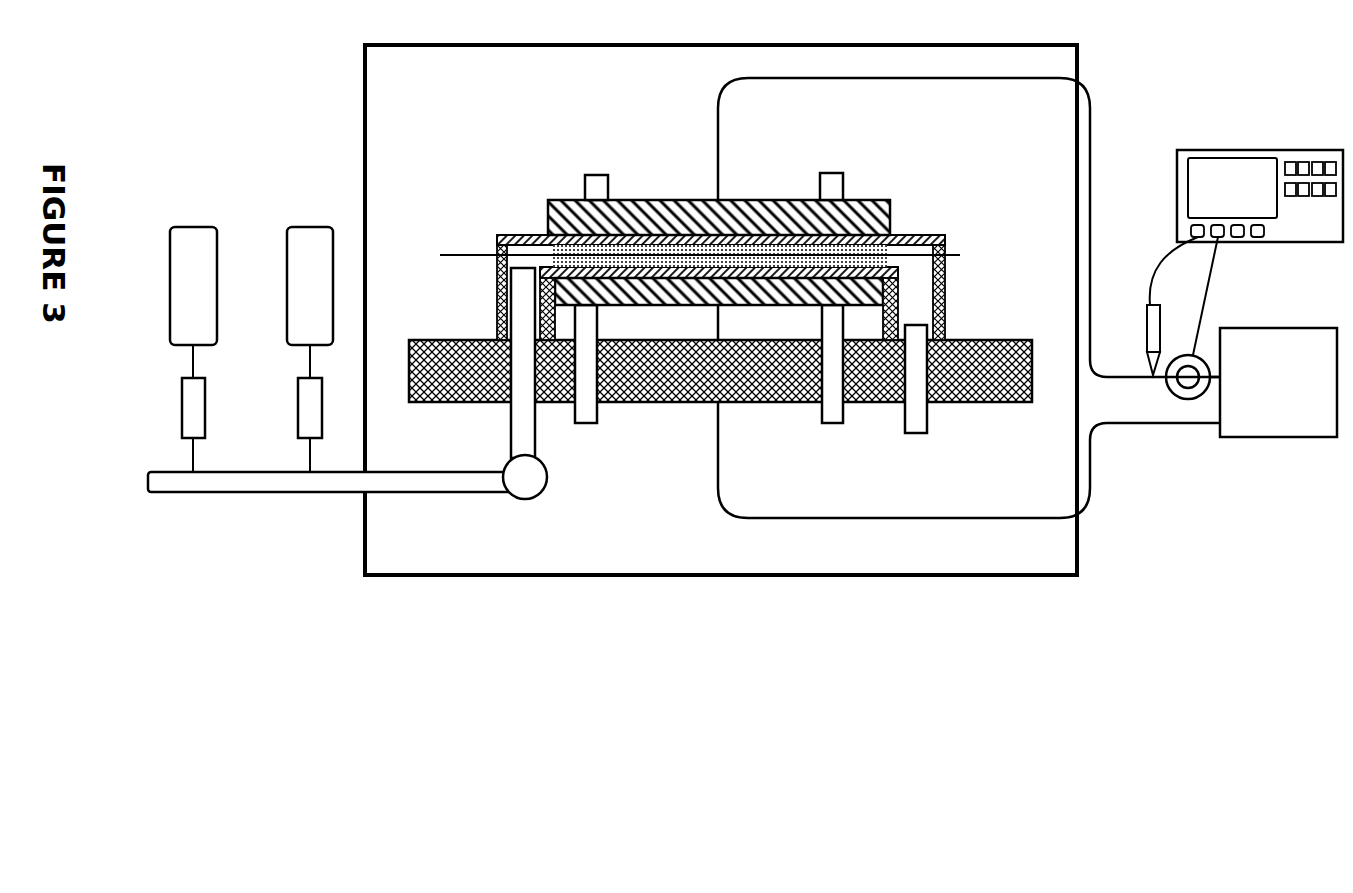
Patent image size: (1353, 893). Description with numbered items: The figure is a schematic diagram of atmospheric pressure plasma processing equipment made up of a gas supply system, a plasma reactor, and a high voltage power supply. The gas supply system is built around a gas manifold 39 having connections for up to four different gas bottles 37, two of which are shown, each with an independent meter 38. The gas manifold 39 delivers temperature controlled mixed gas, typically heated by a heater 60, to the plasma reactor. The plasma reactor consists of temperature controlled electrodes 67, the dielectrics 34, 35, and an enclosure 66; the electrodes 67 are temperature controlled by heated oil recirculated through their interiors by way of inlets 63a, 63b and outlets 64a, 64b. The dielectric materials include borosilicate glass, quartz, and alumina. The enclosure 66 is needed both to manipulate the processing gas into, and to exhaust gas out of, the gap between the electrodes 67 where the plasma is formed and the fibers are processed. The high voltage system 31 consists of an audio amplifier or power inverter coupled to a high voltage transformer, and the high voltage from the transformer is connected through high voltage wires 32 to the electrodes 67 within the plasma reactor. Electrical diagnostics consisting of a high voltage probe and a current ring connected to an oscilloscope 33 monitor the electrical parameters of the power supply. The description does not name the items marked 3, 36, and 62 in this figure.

The substrate web 3 is at (890, 292).
The high voltage system 31 is at (1278, 382).
The high voltage wires 32 is at (1095, 117).
The oscilloscope 33 is at (1268, 150).
The dielectric 34 is at (695, 243).
The dielectric 35 is at (445, 339).
The chamber lid 36 is at (742, 235).
The gas bottles 37 is at (287, 228).
The meters 38 is at (297, 410).
The gas manifold 39 is at (250, 495).
The heater 60 is at (540, 498).
The support post 62 is at (916, 433).
The inlet 63a is at (590, 173).
The inlet 63b is at (590, 425).
The outlet 64a is at (831, 173).
The outlet 64b is at (832, 423).
The enclosure 66 is at (998, 43).
The electrodes 67 is at (895, 212).